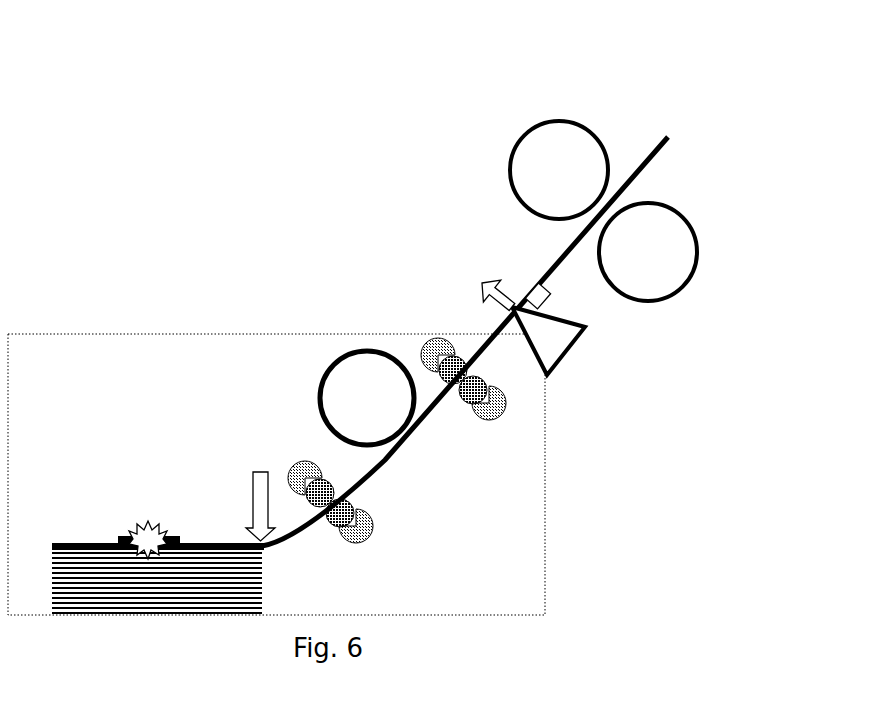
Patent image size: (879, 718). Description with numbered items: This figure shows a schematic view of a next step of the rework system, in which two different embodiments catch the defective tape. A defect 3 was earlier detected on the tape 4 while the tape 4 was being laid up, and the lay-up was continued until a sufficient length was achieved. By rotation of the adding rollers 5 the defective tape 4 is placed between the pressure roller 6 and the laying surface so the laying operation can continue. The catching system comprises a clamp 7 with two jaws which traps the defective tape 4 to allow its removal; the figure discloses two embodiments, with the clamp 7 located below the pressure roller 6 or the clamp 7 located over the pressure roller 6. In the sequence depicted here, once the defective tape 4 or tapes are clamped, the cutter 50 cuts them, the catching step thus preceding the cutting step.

The defect 3 is at (149, 530).
The tape 4 is at (555, 268).
The adding rollers 5 is at (565, 137).
The pressure roller 6 is at (344, 380).
The clamp 7 is at (347, 508).
The cutter 50 is at (555, 343).